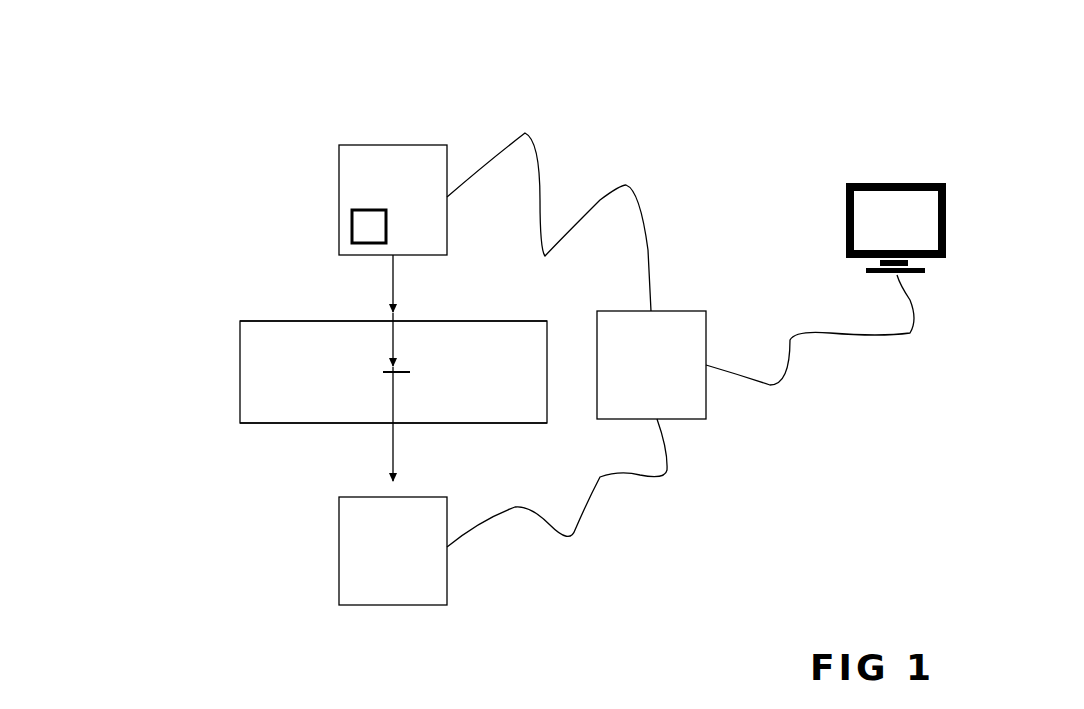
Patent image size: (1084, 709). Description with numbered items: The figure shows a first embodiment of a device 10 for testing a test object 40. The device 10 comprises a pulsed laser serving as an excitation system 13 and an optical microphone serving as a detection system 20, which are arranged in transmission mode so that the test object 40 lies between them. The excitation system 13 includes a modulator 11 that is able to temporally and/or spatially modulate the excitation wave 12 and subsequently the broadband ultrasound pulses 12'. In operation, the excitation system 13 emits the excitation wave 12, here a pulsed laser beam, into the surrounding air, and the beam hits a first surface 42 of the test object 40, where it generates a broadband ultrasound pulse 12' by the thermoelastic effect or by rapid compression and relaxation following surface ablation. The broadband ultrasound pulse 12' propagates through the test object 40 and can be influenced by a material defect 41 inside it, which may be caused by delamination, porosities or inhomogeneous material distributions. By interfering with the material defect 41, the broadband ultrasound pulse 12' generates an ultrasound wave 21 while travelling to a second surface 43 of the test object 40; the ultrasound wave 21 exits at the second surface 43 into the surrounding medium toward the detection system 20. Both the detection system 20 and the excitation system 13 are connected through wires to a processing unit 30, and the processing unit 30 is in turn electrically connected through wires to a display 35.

The device 10 is at (265, 100).
The excitation system 13 is at (352, 191).
The modulator 11 is at (358, 236).
The excitation wave 12 is at (272, 258).
The broadband ultrasound pulse 12' is at (233, 306).
The first surface 42 is at (243, 321).
The test object 40 is at (297, 352).
The material defect 41 is at (383, 372).
The second surface 43 is at (295, 423).
The ultrasound wave 21 is at (393, 459).
The detection system 20 is at (367, 578).
The processing unit 30 is at (680, 408).
The display 35 is at (877, 211).